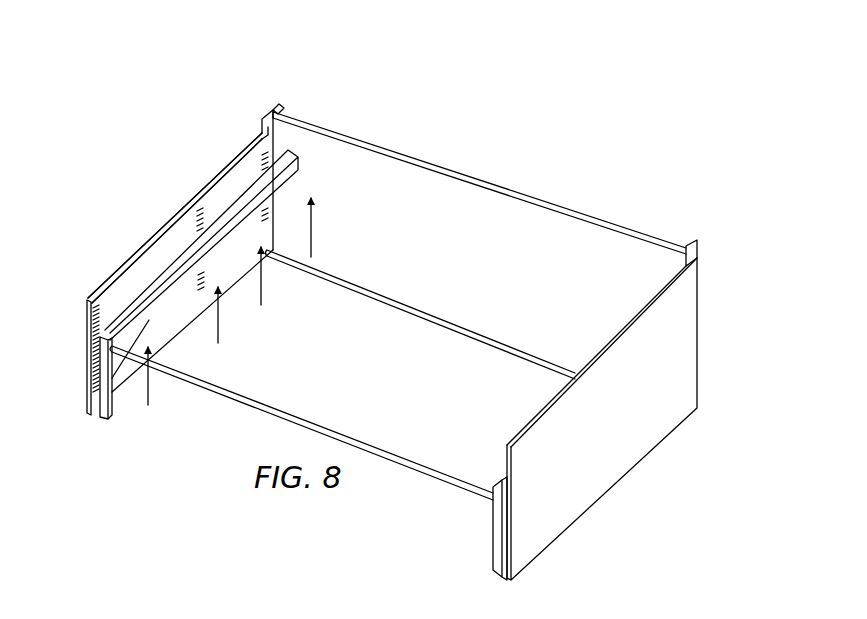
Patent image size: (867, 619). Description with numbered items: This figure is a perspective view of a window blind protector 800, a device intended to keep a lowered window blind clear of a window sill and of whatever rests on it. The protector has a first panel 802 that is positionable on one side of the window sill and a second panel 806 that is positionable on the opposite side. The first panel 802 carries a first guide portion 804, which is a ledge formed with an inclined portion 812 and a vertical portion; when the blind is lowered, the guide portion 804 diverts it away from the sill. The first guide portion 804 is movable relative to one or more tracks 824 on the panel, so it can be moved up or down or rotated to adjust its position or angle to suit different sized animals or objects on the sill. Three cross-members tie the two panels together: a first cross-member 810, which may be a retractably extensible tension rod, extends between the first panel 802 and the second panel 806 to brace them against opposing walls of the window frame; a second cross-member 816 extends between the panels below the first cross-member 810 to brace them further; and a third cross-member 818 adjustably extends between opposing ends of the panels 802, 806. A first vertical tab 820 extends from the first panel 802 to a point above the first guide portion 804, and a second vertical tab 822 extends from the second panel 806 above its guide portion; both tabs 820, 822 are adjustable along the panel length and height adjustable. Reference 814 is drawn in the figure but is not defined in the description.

The window blind protector 800 is at (580, 150).
The first panel 802 is at (180, 209).
The first guide portion 804 is at (132, 302).
The second panel 806 is at (690, 342).
The first cross-member 810 is at (450, 170).
The inclined portion 812 is at (169, 256).
The teeth 814 is at (101, 420).
The second cross-member 816 is at (418, 308).
The third cross-member 818 is at (374, 432).
The first vertical tab 820 is at (272, 106).
The second vertical tab 822 is at (700, 248).
The tracks 824 is at (207, 205).